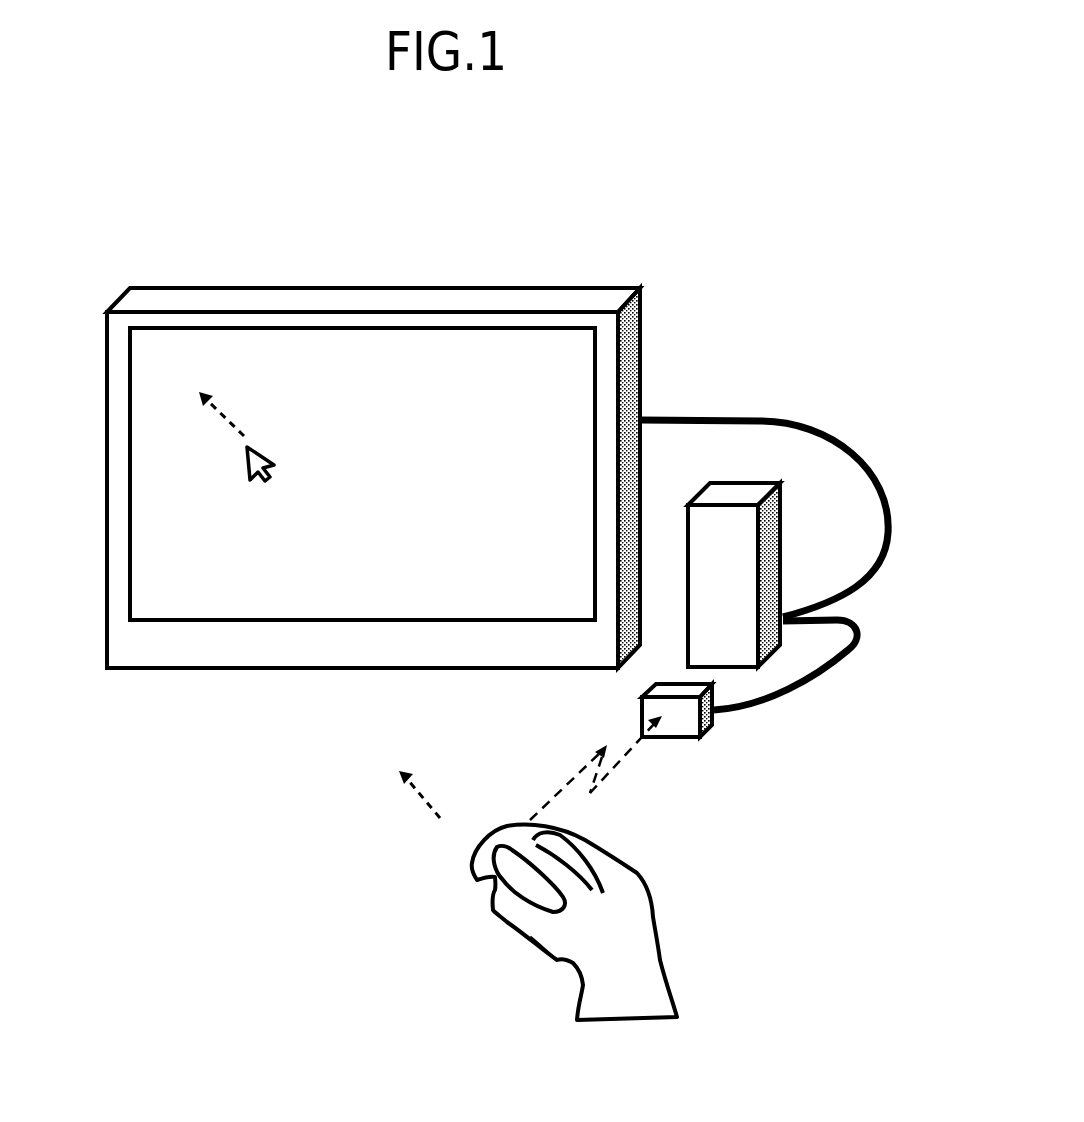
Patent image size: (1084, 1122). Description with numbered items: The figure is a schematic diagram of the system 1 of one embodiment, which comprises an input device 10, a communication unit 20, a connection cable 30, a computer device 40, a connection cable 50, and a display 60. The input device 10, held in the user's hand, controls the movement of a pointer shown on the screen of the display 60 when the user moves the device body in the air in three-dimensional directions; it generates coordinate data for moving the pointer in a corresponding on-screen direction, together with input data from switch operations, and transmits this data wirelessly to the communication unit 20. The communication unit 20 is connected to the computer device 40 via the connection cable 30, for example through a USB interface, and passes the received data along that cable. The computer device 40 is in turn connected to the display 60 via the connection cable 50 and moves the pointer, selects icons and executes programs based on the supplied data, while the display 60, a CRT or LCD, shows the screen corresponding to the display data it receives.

The system 1 is at (71, 194).
The input device 10 is at (503, 833).
The communication unit 20 is at (690, 738).
The connection cable 30 is at (830, 660).
The computer device 40 is at (783, 520).
The connection cable 50 is at (767, 420).
The display 60 is at (525, 288).